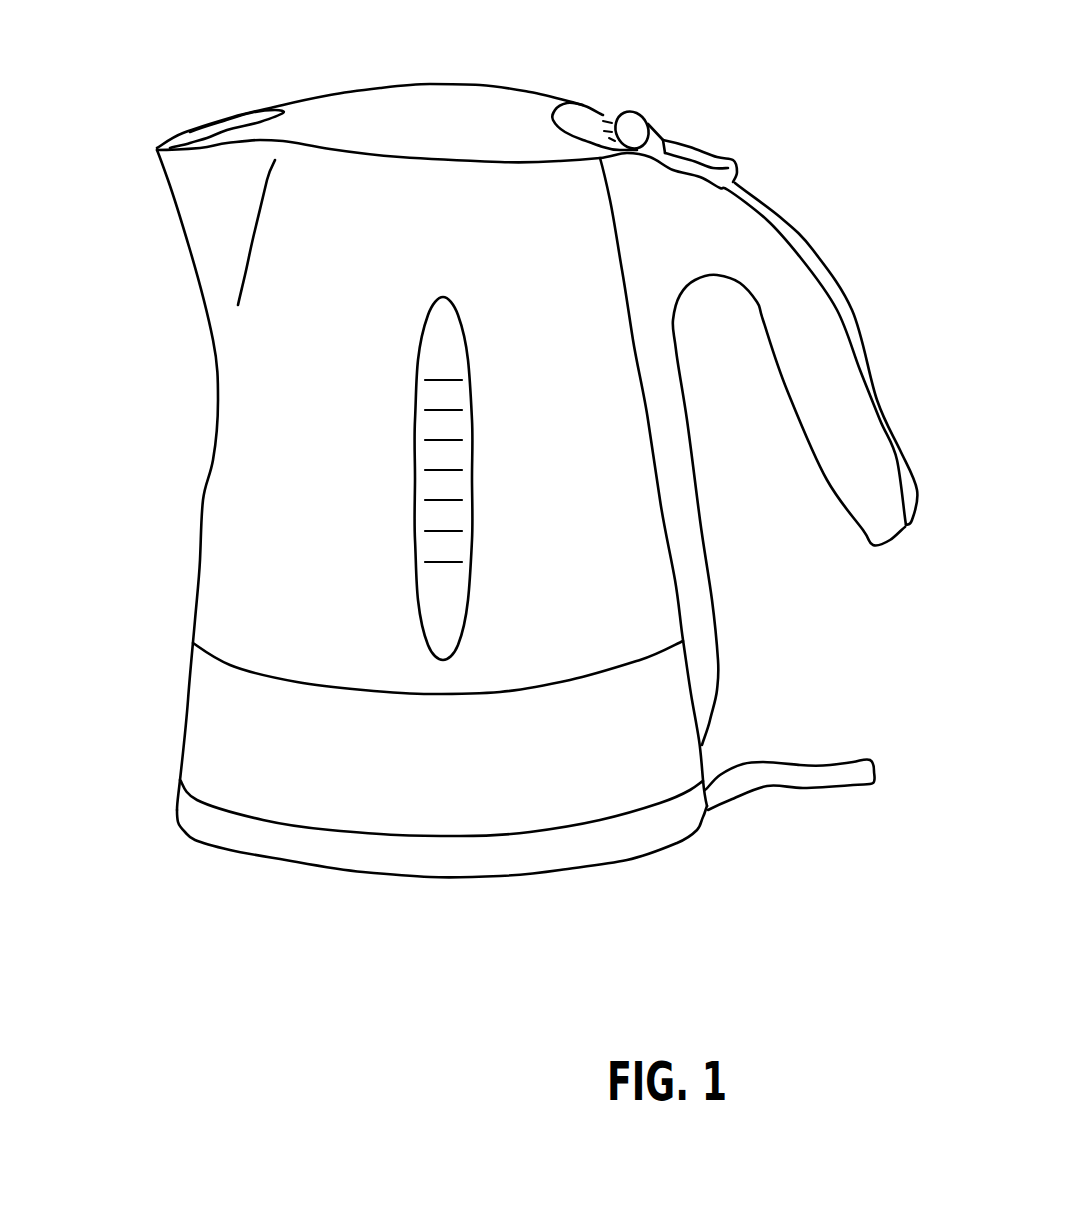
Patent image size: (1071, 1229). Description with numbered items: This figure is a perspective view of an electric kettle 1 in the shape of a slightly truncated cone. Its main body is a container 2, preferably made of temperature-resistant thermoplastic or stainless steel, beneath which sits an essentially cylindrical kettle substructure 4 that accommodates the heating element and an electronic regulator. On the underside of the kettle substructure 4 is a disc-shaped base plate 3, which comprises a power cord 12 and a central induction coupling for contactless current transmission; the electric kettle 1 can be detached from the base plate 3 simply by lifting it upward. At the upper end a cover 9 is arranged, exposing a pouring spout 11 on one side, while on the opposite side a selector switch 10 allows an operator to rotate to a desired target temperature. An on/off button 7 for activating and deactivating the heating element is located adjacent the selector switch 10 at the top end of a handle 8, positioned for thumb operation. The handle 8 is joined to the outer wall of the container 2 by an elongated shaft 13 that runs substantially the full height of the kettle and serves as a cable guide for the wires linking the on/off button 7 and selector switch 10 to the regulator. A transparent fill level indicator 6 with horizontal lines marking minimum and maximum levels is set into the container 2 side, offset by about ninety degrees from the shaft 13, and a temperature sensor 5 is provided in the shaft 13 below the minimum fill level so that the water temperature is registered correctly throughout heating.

The electric kettle 1 is at (150, 683).
The container 2 is at (272, 315).
The base plate 3 is at (615, 842).
The kettle substructure 4 is at (335, 800).
The temperature sensor 5 is at (685, 538).
The fill level indicator 6 is at (427, 490).
The on/off button 7 is at (717, 160).
The handle 8 is at (820, 355).
The cover 9 is at (455, 118).
The selector switch 10 is at (638, 123).
The pouring spout 11 is at (205, 137).
The power cord 12 is at (827, 775).
The shaft 13 is at (710, 650).